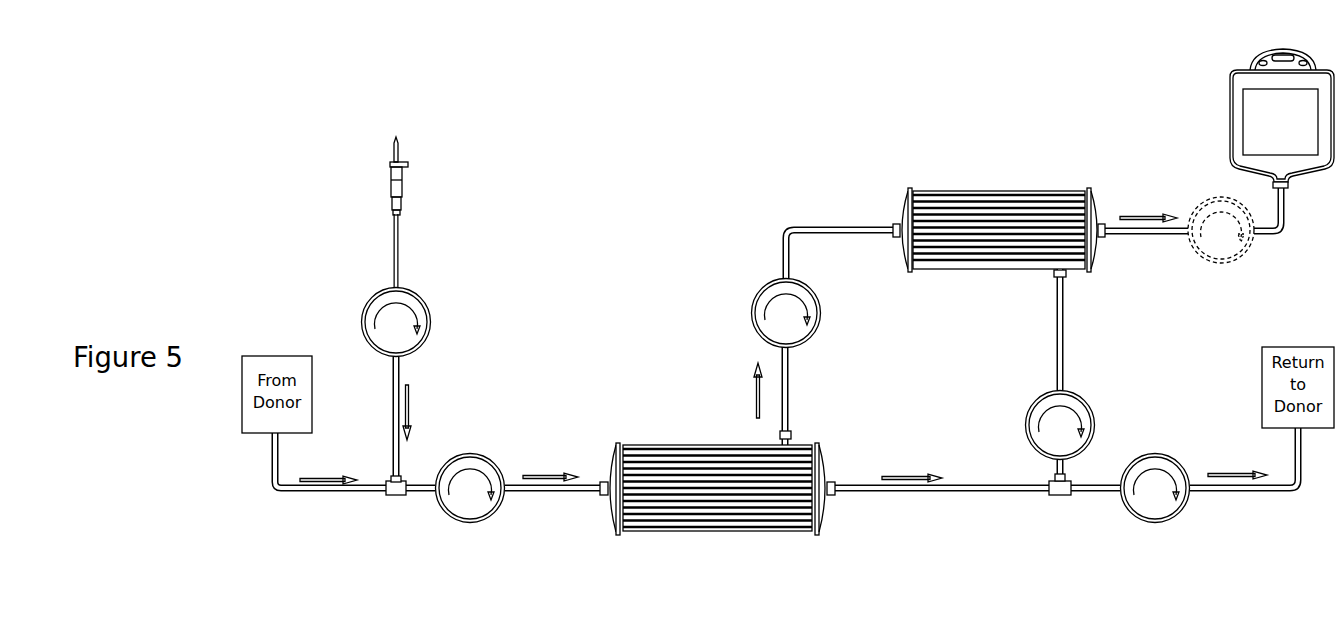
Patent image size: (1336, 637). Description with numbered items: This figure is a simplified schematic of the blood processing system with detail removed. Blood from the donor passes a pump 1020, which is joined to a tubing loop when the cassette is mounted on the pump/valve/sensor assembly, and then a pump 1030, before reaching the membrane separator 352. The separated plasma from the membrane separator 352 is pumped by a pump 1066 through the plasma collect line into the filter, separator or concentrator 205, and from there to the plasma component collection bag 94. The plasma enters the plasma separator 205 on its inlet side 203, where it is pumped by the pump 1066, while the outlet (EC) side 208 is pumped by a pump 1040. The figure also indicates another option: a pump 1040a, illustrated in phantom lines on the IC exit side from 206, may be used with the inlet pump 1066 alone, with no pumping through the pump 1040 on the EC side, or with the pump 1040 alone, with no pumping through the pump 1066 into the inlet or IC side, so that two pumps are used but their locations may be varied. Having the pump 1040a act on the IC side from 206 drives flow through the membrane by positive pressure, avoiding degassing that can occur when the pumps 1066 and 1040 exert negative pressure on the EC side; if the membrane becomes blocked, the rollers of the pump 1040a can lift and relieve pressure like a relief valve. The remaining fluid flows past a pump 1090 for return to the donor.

The plasma component collection bag 94 is at (1230, 120).
The inlet side 203 is at (896, 238).
The plasma separator 205 is at (990, 261).
The IC exit side 206 is at (1102, 236).
The outlet (EC) side 208 is at (1055, 277).
The membrane separator 352 is at (685, 445).
The pump 1020 is at (433, 322).
The pump 1030 is at (465, 457).
The pump 1040 is at (1030, 405).
The pump 1040a is at (1222, 263).
The pump 1066 is at (752, 313).
The pump 1090 is at (1155, 451).